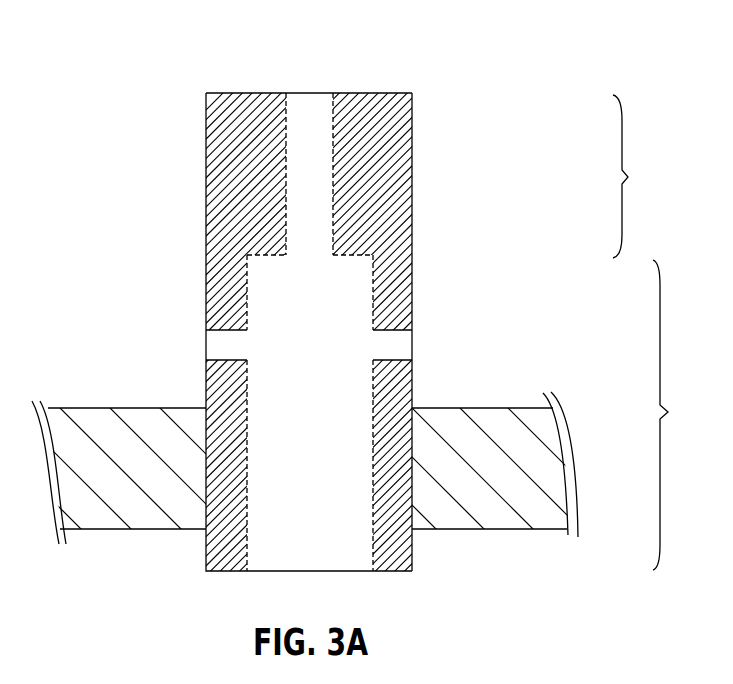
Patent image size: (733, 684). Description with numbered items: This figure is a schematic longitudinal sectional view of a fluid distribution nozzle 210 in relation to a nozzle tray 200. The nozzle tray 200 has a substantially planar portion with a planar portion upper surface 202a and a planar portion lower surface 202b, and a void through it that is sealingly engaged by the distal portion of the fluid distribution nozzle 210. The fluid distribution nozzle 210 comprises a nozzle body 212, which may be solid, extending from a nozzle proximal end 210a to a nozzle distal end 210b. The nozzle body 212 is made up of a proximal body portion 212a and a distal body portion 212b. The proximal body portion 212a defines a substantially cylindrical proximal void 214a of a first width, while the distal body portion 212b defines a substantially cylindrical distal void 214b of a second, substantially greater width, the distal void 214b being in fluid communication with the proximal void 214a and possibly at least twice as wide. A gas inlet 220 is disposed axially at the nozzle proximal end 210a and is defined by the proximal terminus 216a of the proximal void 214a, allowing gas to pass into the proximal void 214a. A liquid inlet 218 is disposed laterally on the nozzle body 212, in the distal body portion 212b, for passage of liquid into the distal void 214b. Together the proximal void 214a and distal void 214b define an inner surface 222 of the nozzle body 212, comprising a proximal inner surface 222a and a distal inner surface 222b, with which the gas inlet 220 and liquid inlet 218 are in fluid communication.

The nozzle tray 200 is at (366, 342).
The planar portion upper surface 202a is at (492, 403).
The planar portion lower surface 202b is at (504, 533).
The fluid distribution nozzle 210 is at (366, 342).
The nozzle proximal end 210a is at (197, 96).
The nozzle distal end 210b is at (193, 570).
The nozzle body 212 is at (425, 250).
The proximal body portion 212a is at (203, 173).
The distal body portion 212b is at (203, 385).
The proximal void 214a is at (308, 174).
The distal void 214b is at (288, 465).
The proximal terminus 216a is at (336, 88).
The liquid inlet 218 is at (418, 344).
The gas inlet 220 is at (297, 91).
The inner surface 222 is at (254, 306).
The proximal inner surface 222a is at (327, 125).
The distal inner surface 222b is at (363, 552).